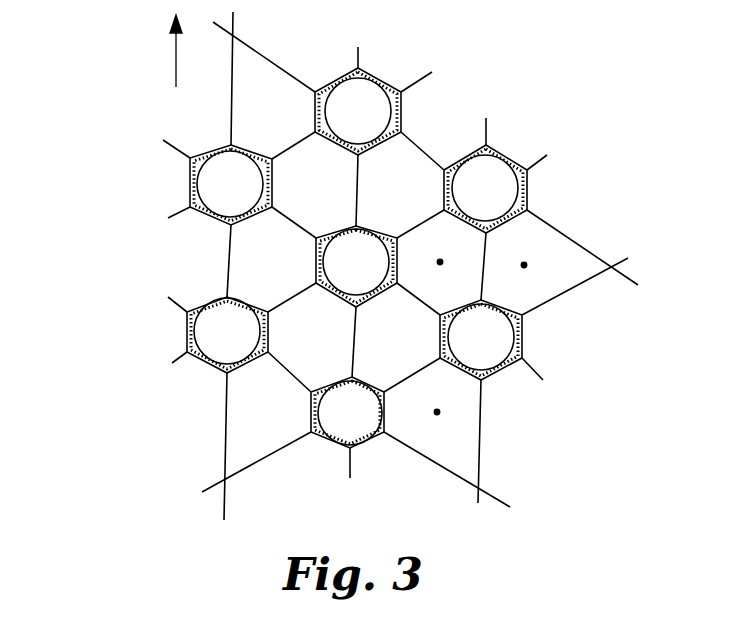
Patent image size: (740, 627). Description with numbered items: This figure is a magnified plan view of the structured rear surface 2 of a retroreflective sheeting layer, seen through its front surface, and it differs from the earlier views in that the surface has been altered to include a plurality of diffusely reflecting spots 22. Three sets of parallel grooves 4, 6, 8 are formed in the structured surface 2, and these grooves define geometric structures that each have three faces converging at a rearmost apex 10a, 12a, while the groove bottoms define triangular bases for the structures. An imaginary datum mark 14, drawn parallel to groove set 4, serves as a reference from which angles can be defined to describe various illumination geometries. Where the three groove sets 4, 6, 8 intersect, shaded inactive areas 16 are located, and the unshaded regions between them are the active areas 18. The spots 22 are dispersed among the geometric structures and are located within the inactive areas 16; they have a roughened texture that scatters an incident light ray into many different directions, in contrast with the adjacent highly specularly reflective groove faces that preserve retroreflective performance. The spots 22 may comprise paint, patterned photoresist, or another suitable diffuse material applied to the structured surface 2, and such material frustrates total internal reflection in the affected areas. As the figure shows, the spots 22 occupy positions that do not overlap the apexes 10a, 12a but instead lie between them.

The structured rear surface 2 is at (115, 122).
The groove set 4 is at (350, 467).
The groove set 6 is at (633, 277).
The groove set 8 is at (420, 72).
The apex 10a is at (524, 265).
The apex 12a is at (440, 262).
The imaginary datum mark 14 is at (175, 60).
The inactive areas 16 is at (188, 177).
The active areas 18 is at (302, 198).
The diffusely reflecting spots 22 is at (342, 124).